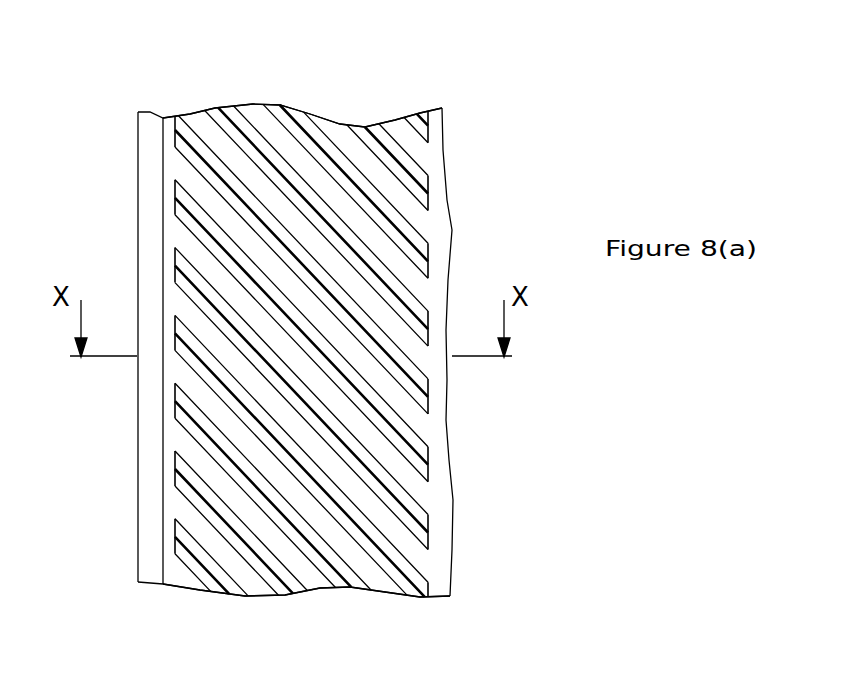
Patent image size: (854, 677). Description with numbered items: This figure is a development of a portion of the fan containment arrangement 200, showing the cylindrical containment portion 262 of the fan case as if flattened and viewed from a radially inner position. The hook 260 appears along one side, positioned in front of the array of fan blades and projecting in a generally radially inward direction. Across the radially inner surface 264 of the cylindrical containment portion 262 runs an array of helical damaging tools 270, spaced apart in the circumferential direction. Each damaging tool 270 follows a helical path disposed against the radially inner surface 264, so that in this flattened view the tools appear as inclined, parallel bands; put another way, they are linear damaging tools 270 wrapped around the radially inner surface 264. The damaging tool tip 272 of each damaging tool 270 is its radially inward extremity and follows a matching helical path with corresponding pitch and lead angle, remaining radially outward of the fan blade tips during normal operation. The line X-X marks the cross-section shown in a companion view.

The fan containment arrangement 200 is at (348, 92).
The hook 260 is at (148, 400).
The cylindrical containment portion 262 is at (425, 148).
The radially inner surface 264 is at (435, 557).
The damaging tool 270 is at (395, 272).
The damaging tool tip 272 is at (193, 223).